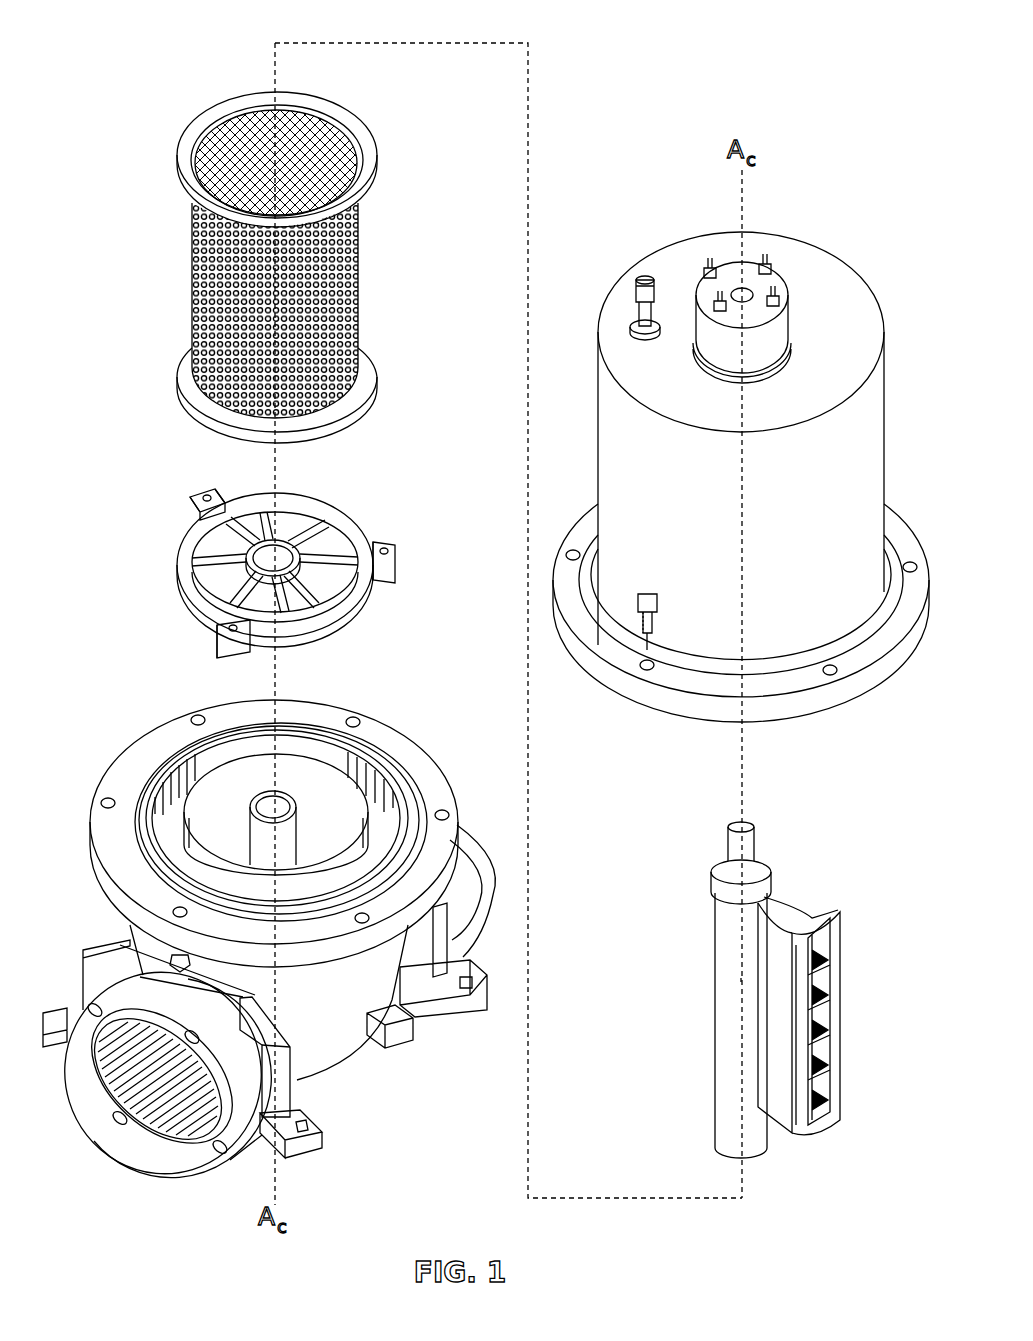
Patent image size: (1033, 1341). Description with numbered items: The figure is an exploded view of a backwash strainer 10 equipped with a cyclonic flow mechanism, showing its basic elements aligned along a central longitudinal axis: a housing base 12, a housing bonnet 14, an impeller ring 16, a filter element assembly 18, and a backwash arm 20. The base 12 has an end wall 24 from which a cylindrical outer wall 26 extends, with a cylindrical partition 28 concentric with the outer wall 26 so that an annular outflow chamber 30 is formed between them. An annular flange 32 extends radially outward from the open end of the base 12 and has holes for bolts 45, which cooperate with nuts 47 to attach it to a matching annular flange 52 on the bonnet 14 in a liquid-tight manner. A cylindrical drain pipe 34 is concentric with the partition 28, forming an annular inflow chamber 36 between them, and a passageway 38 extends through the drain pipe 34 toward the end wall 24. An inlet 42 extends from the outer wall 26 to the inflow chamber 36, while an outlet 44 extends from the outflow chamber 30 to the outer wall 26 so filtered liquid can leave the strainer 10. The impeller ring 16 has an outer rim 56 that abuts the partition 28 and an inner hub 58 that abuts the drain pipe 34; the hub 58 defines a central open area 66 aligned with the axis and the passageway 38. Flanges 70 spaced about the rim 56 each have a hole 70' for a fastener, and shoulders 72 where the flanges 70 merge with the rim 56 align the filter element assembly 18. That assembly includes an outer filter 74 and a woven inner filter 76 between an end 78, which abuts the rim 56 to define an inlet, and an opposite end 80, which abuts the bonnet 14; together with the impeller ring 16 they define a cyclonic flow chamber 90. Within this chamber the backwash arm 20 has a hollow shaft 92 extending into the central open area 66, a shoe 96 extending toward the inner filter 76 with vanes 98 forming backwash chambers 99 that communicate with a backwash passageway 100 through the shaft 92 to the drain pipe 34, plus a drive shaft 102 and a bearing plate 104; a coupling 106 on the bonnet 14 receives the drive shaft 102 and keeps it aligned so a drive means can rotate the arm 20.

The backwash strainer 10 is at (160, 30).
The housing base 12 is at (125, 708).
The housing bonnet 14 is at (620, 427).
The impeller ring 16 is at (157, 563).
The filter element assembly 18 is at (157, 262).
The backwash arm 20 is at (860, 925).
The end wall 24 is at (327, 1077).
The cylindrical outer wall 26 is at (325, 1058).
The cylindrical partition 28 is at (388, 820).
The outflow chamber 30 is at (170, 845).
The annular flange 32 is at (107, 827).
The cylindrical drain pipe 34 is at (175, 835).
The inflow chamber 36 is at (333, 800).
The passageway 38 is at (283, 788).
The inlet 42 is at (448, 866).
The outlet 44 is at (168, 1080).
The bolt 45 is at (640, 590).
The nut 47 is at (132, 942).
The annular flange 52 is at (612, 650).
The outer rim 56 is at (200, 598).
The inner hub 58 is at (263, 540).
The central open area 66 is at (246, 512).
The flanges 70 is at (295, 585).
The hole 70' is at (283, 569).
The shoulders 72 is at (190, 500).
The outer filter 74 is at (360, 272).
The inner filter 76 is at (320, 135).
The end 78 is at (363, 362).
The opposite end 80 is at (363, 143).
The cyclonic flow chamber 90 is at (212, 152).
The shaft 92 is at (730, 1060).
The shoe 96 is at (820, 915).
The vanes 98 is at (832, 978).
The backwash chambers 99 is at (836, 960).
The backwash passageway 100 is at (738, 980).
The drive shaft 102 is at (750, 845).
The bearing plate 104 is at (720, 890).
The coupling 106 is at (773, 283).